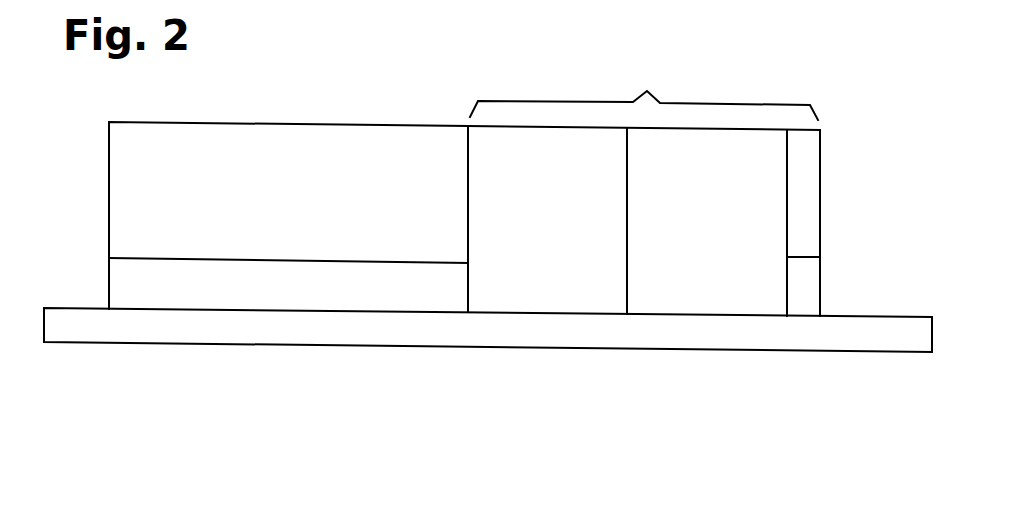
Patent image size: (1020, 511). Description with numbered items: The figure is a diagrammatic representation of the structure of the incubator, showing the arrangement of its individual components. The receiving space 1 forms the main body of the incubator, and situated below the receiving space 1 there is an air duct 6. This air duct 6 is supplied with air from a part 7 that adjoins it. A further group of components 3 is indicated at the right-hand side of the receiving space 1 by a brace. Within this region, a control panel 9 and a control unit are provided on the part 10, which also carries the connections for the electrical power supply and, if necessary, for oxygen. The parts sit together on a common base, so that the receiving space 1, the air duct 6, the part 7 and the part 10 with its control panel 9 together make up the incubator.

The receiving space 1 is at (292, 140).
The sensor arrangement 3 is at (644, 92).
The air duct 6 is at (305, 295).
The part 7 is at (540, 302).
The control panel 9 is at (803, 177).
The part 10 is at (805, 277).